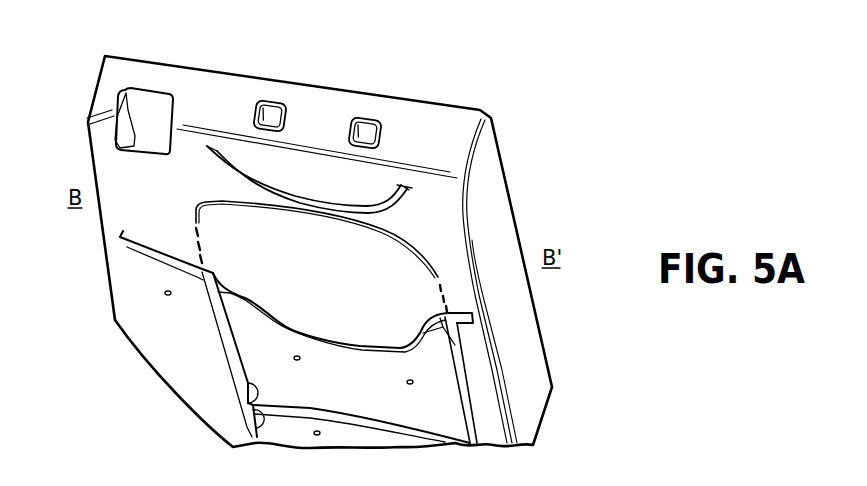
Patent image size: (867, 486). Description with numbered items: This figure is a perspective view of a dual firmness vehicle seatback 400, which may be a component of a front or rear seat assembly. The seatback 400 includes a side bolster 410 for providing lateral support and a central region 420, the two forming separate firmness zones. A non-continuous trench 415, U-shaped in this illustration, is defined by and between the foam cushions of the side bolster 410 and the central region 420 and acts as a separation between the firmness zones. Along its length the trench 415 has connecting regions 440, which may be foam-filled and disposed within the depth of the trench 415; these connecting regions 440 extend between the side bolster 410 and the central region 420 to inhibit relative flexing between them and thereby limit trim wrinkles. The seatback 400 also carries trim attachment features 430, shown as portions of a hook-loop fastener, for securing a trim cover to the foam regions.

The vehicle seatback 400 is at (545, 40).
The side bolster 410 is at (177, 184).
The non-continuous trench 415 is at (192, 223).
The central region 420 is at (327, 287).
The trim attachment feature 430 is at (407, 190).
The connecting region 440 is at (198, 240).